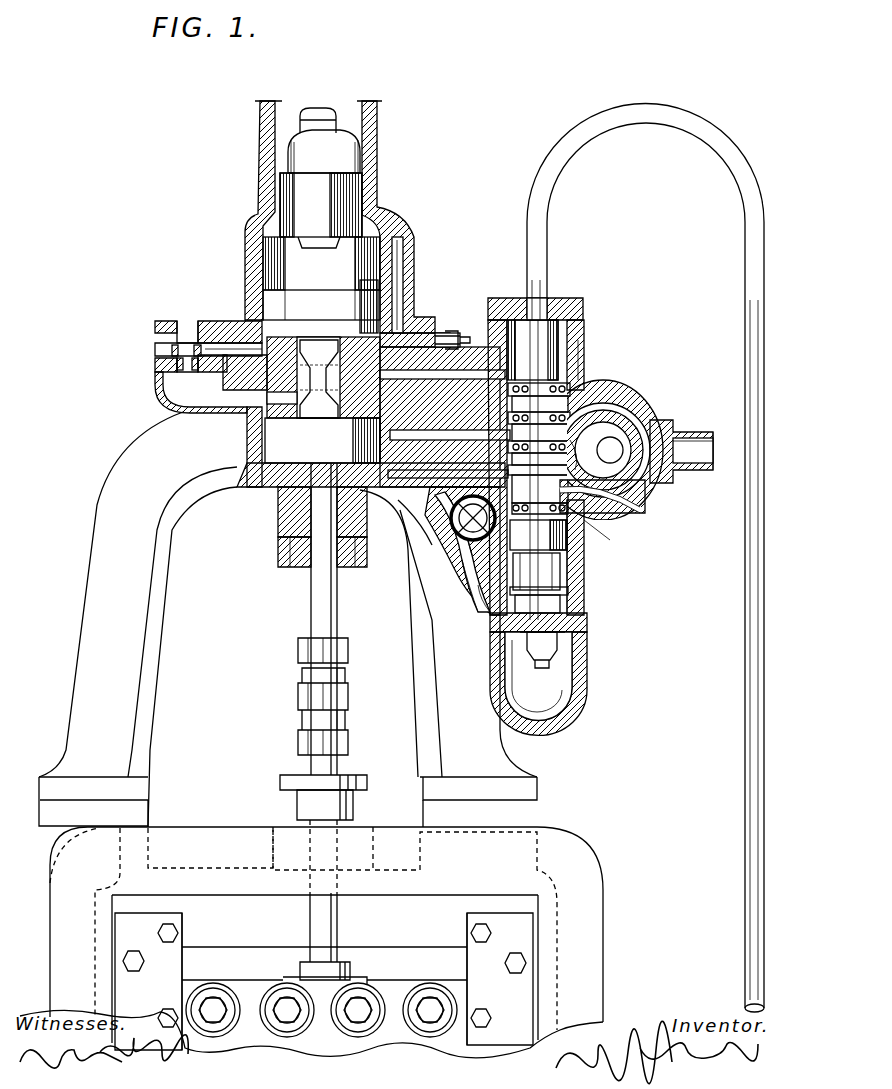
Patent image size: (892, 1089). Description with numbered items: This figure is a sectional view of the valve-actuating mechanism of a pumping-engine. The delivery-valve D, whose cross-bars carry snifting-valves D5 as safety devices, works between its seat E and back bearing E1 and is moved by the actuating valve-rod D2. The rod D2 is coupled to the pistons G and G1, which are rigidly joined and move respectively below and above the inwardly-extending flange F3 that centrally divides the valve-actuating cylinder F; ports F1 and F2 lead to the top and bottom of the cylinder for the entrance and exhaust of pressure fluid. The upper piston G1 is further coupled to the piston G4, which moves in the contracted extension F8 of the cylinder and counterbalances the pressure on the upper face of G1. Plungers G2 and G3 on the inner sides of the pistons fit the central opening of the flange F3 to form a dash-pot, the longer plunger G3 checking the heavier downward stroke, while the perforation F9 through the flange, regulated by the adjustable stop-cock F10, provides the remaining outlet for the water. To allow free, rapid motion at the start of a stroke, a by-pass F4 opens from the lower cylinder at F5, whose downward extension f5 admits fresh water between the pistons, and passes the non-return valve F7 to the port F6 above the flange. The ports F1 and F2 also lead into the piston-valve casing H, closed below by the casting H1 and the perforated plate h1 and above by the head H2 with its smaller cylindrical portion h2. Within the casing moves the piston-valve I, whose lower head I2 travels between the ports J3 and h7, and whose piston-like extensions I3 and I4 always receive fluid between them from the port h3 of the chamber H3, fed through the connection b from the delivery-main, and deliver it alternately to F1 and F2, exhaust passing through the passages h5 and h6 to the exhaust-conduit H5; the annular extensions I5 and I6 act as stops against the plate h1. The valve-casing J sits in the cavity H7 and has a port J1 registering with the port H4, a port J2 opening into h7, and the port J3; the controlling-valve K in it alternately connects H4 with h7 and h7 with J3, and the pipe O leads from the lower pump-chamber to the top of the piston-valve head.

The connection pipe O is at (750, 600).
The valve-actuating cylinder F is at (258, 244).
The port F1 is at (405, 252).
The contracted extension of the cylinder F8 is at (362, 160).
The counterbalancing piston G4 is at (321, 205).
The upper piston G1 is at (321, 285).
The inwardly-extending flange F3 is at (281, 305).
The plunger G3 is at (347, 305).
The non-return valve F7 is at (155, 350).
The by-pass outlet port F6 is at (250, 330).
The by-pass F4 is at (160, 398).
The perforation through the flange F9 is at (417, 320).
The adjustable stop-cock F10 is at (458, 326).
The plunger G2 is at (340, 398).
The by-pass entrance opening F5 is at (282, 389).
The lower piston G is at (322, 440).
The downward extension of the by-pass opening f5 is at (247, 426).
The port F2 is at (338, 512).
The port of the valve-casing J1 is at (332, 552).
The actuating valve-rod D2 is at (308, 580).
The controlling-valve K is at (288, 619).
The valve-casing J is at (401, 542).
The port J3 is at (454, 548).
The port J2 is at (460, 597).
The cavity H7 is at (462, 542).
The port h7 is at (478, 615).
The head H2 is at (560, 303).
The inwardly-extending cylindrical portion h2 is at (585, 346).
The piston-valve I is at (532, 350).
The piston-like extension I4 is at (500, 395).
The lower head I2 is at (570, 540).
The annular extension I5 is at (562, 588).
The piston-valve casing H is at (572, 565).
The central perforated plate h1 is at (588, 624).
The casting H1 is at (583, 676).
The annular extension I6 is at (541, 663).
The piston-like extension I3 is at (630, 398).
The connection from the delivery-main b is at (610, 450).
The port h3 is at (590, 452).
The exhaust-passage h5 is at (592, 392).
The chamber H3 is at (681, 451).
The exhaust-conduit H5 is at (708, 451).
The port H4 is at (640, 512).
The exhaust-passage h6 is at (626, 532).
The valve seat E is at (326, 925).
The back bearing E1 is at (324, 975).
The delivery-valve D is at (342, 889).
The snifting-valves D5 is at (382, 1052).